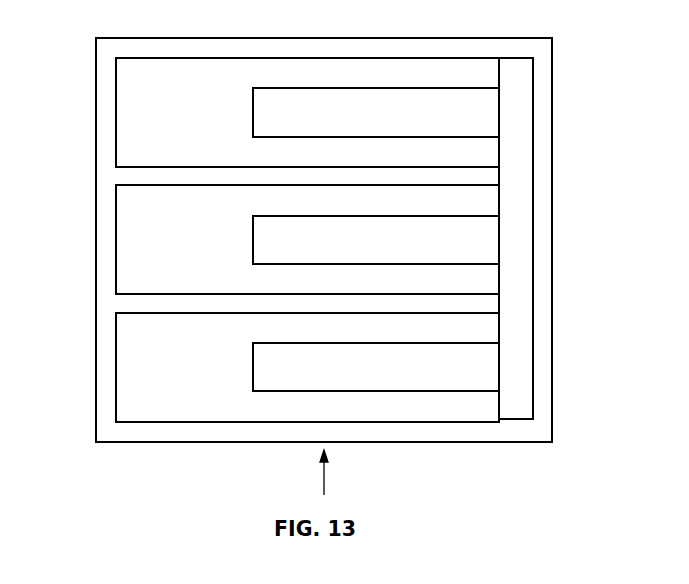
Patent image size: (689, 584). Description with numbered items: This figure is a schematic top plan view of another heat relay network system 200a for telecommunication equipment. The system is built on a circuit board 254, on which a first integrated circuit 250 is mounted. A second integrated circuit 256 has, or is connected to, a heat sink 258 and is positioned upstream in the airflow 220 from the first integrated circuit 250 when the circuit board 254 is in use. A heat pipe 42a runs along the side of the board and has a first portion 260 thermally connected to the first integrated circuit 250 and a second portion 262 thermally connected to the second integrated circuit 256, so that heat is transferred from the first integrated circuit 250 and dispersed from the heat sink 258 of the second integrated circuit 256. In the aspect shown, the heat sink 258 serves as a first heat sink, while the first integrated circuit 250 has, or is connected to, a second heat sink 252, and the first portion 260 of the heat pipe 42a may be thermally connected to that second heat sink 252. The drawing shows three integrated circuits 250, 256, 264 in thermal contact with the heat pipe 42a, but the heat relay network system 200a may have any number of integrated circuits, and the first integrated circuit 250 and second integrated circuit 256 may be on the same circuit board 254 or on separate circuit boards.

The heat relay network system 200a is at (548, 30).
The circuit board 254 is at (150, 38).
The first integrated circuit 250 is at (116, 112).
The second heat sink 252 is at (253, 105).
The integrated circuit 264 is at (116, 230).
The second integrated circuit 256 is at (116, 368).
The heat sink 258 is at (253, 368).
The heat pipe 42a is at (533, 250).
The first portion 260 is at (533, 118).
The second portion 262 is at (533, 377).
The airflow 220 is at (324, 473).